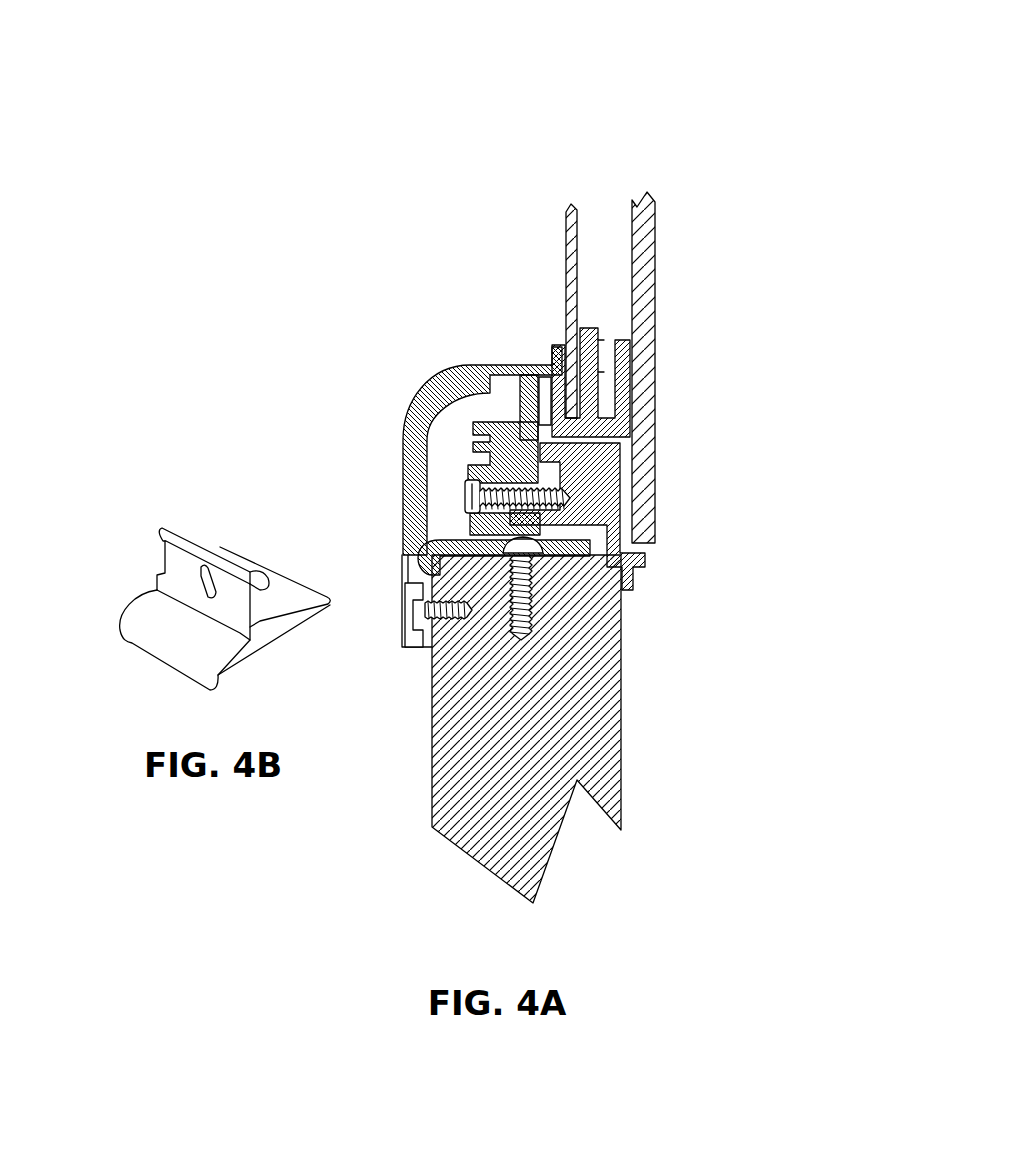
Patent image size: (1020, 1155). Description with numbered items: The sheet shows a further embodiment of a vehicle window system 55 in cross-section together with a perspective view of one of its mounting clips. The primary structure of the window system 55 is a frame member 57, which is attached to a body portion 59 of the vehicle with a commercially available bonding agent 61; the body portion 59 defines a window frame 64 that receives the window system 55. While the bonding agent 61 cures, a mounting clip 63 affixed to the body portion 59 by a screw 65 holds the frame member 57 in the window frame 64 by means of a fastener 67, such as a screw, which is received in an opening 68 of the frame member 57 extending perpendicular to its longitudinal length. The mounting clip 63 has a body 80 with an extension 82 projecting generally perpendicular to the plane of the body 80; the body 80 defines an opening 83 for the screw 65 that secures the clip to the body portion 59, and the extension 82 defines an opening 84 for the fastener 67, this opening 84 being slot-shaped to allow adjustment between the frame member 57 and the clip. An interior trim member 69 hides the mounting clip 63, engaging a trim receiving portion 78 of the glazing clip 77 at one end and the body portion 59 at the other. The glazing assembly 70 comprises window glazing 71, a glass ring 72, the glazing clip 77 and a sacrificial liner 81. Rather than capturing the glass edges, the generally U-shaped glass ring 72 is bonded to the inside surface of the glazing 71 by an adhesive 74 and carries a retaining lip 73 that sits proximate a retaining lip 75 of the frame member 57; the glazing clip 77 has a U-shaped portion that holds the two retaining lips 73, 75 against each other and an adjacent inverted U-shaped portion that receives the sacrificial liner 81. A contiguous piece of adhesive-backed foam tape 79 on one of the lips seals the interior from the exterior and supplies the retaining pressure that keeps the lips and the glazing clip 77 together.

In FIG. 4A, the window system 55 is at (283, 156).
In FIG. 4A, the frame member 57 is at (641, 566).
In FIG. 4A, the body portion 59 is at (489, 700).
In FIG. 4A, the bonding agent 61 is at (621, 591).
In FIG. 4A, the mounting clip 63 is at (455, 510).
In FIG. 4B, the mounting clip 63 is at (265, 556).
In FIG. 4A, the window frame 64 is at (623, 547).
In FIG. 4A, the screw 65 is at (527, 618).
In FIG. 4A, the fastener 67 is at (568, 497).
In FIG. 4A, the opening 68 is at (600, 534).
In FIG. 4A, the interior trim member 69 is at (420, 388).
In FIG. 4A, the glazing assembly 70 is at (628, 173).
In FIG. 4A, the window glazing 71 is at (655, 307).
In FIG. 4A, the glass ring 72 is at (622, 322).
In FIG. 4A, the retaining lip 73 is at (550, 383).
In FIG. 4A, the adhesive 74 is at (628, 367).
In FIG. 4A, the retaining lip 75 is at (528, 365).
In FIG. 4A, the glazing clip 77 is at (505, 372).
In FIG. 4A, the trim receiving portion 78 is at (482, 380).
In FIG. 4A, the foam tape 79 is at (547, 358).
In FIG. 4A, the body 80 is at (440, 553).
In FIG. 4B, the body 80 is at (158, 618).
In FIG. 4A, the sacrificial liner 81 is at (565, 277).
In FIG. 4A, the extension 82 is at (470, 440).
In FIG. 4B, the extension 82 is at (177, 532).
In FIG. 4B, the opening 83 is at (273, 587).
In FIG. 4B, the opening 84 is at (204, 584).